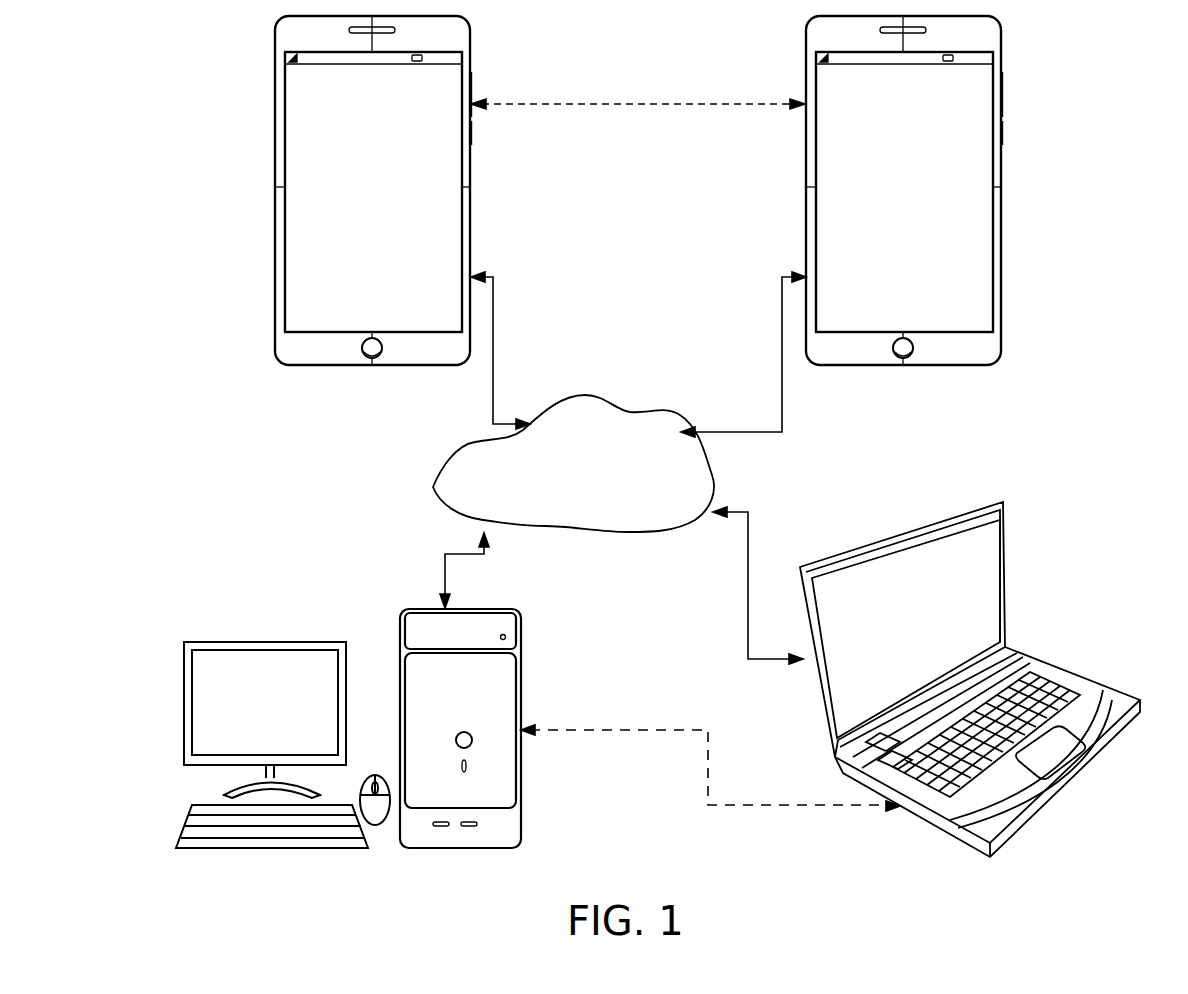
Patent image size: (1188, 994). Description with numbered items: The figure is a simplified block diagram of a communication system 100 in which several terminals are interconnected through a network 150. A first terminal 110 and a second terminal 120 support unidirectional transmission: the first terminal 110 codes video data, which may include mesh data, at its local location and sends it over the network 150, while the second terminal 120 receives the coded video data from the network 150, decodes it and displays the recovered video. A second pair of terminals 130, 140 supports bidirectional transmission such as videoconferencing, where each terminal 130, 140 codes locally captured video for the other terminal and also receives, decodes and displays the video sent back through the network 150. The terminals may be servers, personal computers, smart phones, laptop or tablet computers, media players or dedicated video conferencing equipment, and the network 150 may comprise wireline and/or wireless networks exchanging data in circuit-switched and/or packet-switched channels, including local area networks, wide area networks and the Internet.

The communication system 100 is at (203, 83).
The first terminal 110 is at (1005, 548).
The second terminal 120 is at (520, 815).
The terminal 130 is at (339, 190).
The terminal 140 is at (806, 130).
The network 150 is at (557, 462).